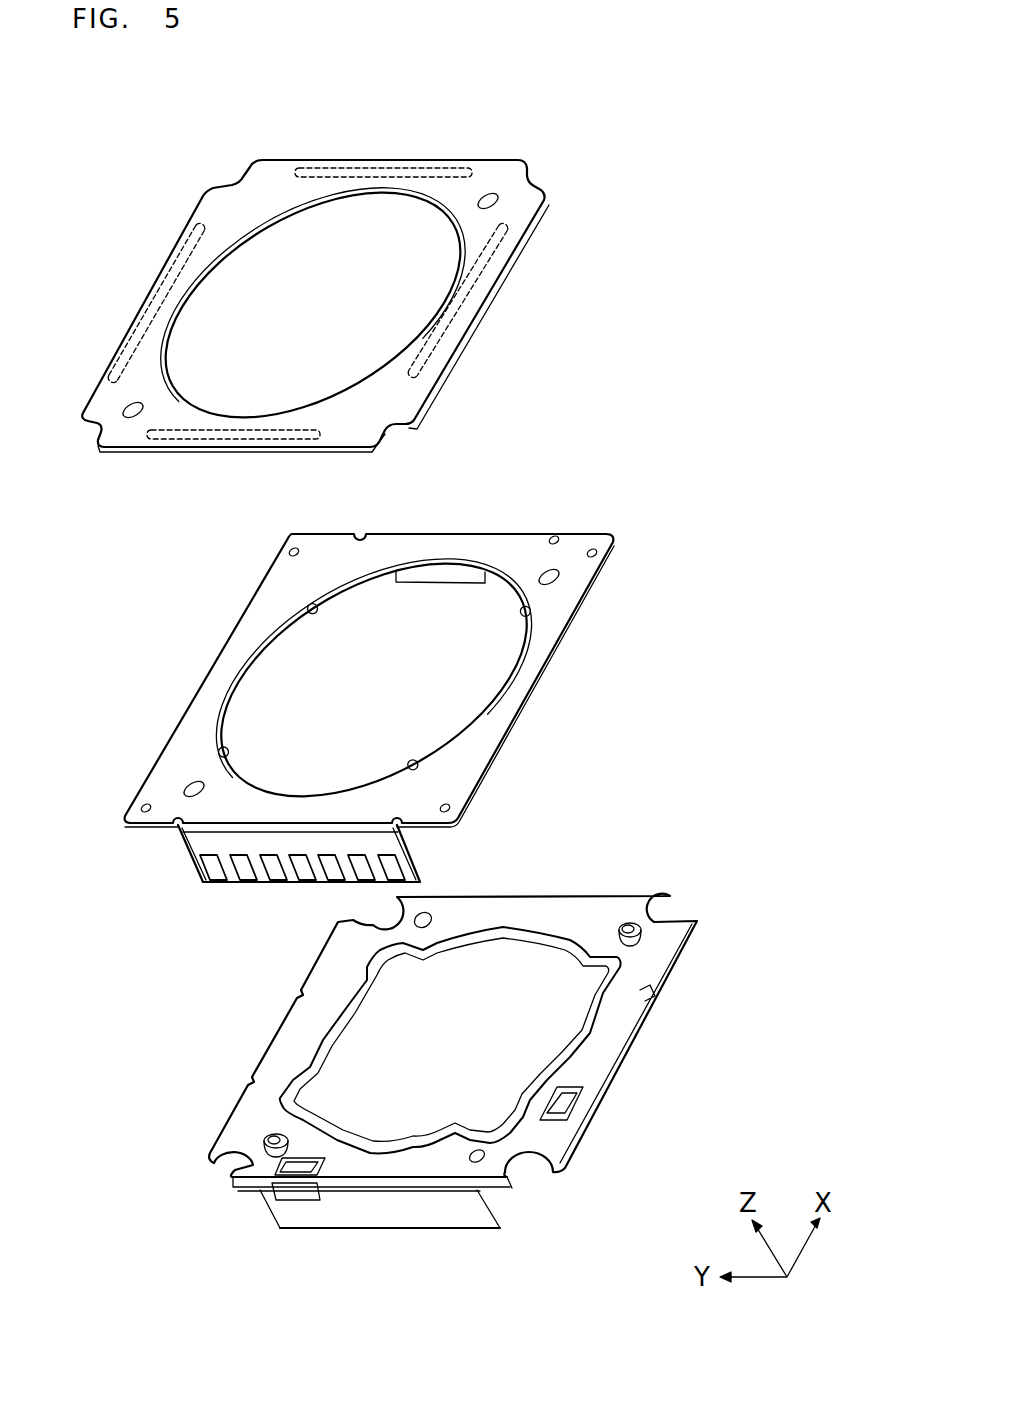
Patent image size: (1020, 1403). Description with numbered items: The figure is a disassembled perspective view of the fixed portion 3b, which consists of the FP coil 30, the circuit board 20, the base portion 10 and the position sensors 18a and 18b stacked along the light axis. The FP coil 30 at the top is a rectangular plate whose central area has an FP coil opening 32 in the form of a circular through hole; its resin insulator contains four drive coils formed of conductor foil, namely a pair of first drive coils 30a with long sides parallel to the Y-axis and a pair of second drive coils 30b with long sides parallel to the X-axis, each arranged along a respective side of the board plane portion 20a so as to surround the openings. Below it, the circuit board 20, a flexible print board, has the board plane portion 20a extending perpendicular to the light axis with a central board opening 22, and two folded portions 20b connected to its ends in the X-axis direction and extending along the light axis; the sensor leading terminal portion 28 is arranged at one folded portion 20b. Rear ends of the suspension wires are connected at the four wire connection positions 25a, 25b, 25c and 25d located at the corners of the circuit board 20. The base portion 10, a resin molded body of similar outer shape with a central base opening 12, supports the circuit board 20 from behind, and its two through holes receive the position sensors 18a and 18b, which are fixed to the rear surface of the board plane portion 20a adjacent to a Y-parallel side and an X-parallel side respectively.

The fixed portion 3b is at (732, 478).
The base portion 10 is at (514, 1067).
The base opening 12 is at (532, 958).
The position sensor 18a is at (300, 1172).
The position sensor 18b is at (570, 1110).
The circuit board 20 is at (412, 707).
The board plane portion 20a is at (560, 622).
The folded portion 20b is at (445, 580).
The board opening 22 is at (476, 690).
The wire connection position 25a is at (146, 806).
The wire connection position 25b is at (447, 806).
The wire connection position 25c is at (594, 550).
The wire connection position 25d is at (294, 550).
The sensor leading terminal portion 28 is at (216, 872).
The FP coil 30 is at (560, 197).
The first drive coil 30a is at (362, 166).
The second drive coil 30b is at (170, 292).
The FP coil opening 32 is at (418, 272).